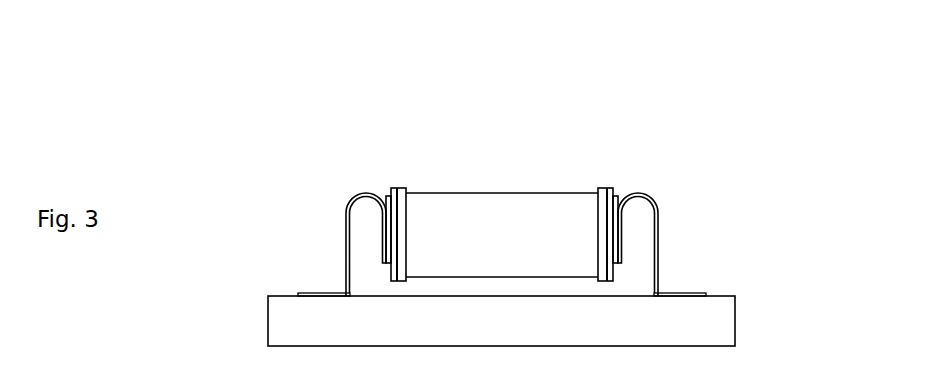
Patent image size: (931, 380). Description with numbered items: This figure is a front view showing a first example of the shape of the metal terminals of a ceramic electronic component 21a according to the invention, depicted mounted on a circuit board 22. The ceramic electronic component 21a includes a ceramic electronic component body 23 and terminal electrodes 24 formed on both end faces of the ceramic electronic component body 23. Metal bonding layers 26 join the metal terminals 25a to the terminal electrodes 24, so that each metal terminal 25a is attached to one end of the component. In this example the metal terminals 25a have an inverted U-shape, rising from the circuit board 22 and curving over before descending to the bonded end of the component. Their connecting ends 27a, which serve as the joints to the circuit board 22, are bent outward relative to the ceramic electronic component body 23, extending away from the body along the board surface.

The ceramic electronic component 21a is at (268, 125).
The circuit board 22 is at (725, 333).
The ceramic electronic component body 23 is at (501, 191).
The terminal electrodes 24 is at (398, 187).
The metal terminals 25a is at (346, 220).
The metal bonding layers 26 is at (392, 187).
The connecting ends 27a is at (327, 292).